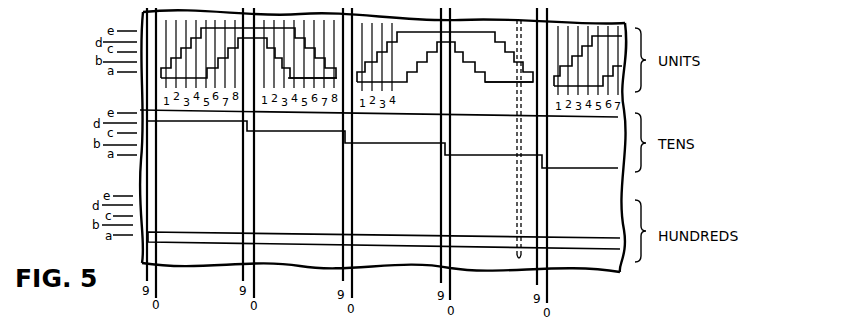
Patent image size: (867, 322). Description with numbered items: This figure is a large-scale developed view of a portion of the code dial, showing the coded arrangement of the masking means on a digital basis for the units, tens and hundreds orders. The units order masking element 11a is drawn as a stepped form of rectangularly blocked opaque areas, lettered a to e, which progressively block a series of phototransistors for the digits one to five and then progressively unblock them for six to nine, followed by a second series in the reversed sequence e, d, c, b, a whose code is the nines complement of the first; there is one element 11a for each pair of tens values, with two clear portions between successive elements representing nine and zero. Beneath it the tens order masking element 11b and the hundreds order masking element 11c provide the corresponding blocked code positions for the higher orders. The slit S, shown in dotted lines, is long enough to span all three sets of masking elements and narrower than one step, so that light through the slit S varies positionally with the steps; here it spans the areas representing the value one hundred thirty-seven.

The units order masking element 11a is at (160, 73).
The tens order masking element 11b is at (428, 130).
The hundreds order masking element 11c is at (497, 243).
The slit S is at (517, 221).